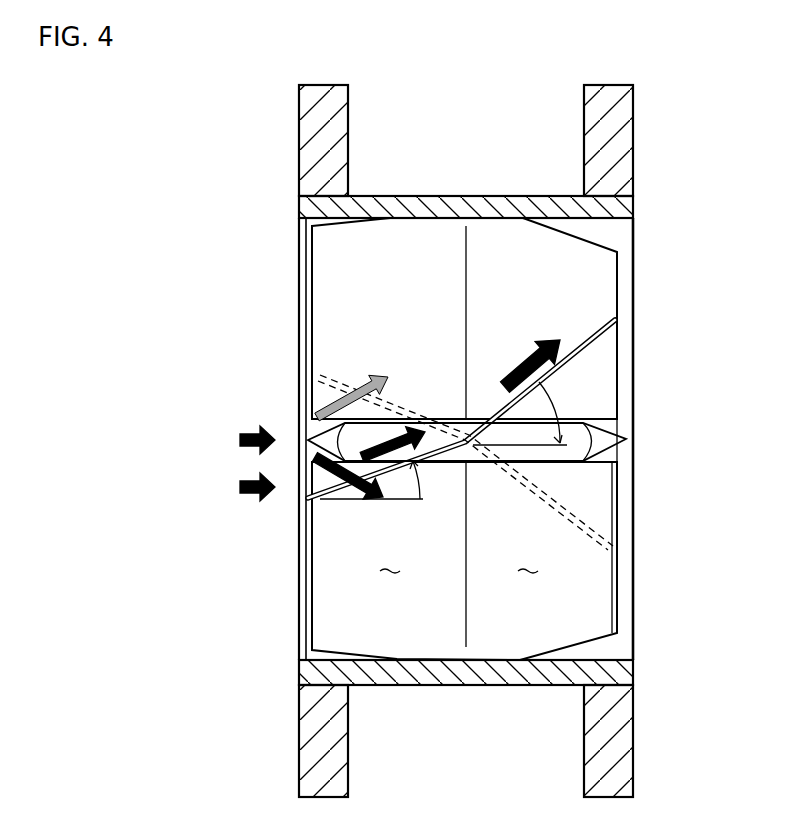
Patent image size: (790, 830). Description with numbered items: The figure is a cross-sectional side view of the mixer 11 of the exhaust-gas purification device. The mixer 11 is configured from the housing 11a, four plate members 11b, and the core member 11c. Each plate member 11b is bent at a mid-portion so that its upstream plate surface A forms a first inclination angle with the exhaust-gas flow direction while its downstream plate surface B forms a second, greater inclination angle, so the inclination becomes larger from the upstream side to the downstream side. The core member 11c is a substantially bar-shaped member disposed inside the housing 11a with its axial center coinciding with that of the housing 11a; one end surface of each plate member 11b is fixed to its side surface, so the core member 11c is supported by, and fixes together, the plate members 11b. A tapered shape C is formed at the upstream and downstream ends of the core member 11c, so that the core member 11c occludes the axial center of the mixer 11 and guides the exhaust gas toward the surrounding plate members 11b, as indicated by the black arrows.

The mixer 11 is at (250, 82).
The housing 11a is at (470, 196).
The plate member 11b is at (306, 282).
The core member 11c is at (624, 438).
The plate surface A is at (305, 489).
The plate surface B is at (614, 318).
The tapered shape C is at (307, 438).